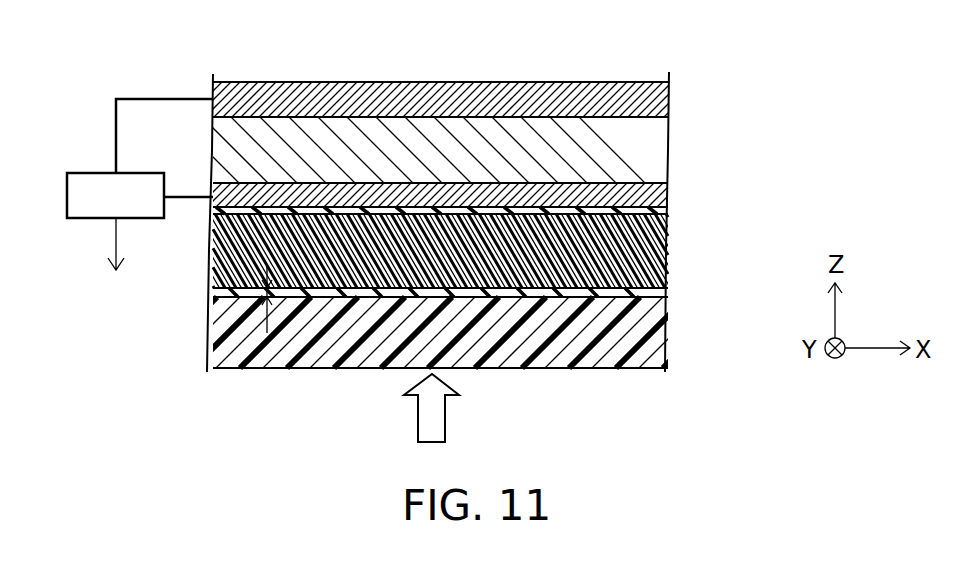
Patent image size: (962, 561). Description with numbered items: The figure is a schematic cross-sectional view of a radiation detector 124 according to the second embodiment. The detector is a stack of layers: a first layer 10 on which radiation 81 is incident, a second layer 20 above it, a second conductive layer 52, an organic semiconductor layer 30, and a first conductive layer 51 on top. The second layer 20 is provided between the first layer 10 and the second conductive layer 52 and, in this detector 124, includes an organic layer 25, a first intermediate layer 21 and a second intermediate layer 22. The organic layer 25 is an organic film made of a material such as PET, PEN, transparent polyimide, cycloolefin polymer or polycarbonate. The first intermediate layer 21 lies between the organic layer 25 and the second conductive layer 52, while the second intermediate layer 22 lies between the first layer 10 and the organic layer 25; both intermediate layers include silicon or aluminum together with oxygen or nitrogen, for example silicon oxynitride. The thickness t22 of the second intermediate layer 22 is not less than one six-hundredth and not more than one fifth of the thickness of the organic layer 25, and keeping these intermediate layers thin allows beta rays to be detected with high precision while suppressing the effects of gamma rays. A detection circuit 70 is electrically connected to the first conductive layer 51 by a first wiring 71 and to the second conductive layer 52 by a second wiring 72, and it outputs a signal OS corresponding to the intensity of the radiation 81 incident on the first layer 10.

The radiation detector 124 is at (807, 78).
The first layer 10 is at (645, 338).
The second layer 20 is at (728, 200).
The first intermediate layer 21 is at (660, 211).
The second intermediate layer 22 is at (660, 292).
The organic layer 25 is at (660, 250).
The organic semiconductor layer 30 is at (642, 148).
The first conductive layer 51 is at (655, 105).
The second conductive layer 52 is at (655, 197).
The detection circuit 70 is at (95, 173).
The first wiring 71 is at (116, 118).
The second wiring 72 is at (188, 197).
The radiation 81 is at (418, 417).
The thickness of the second intermediate layer t22 is at (265, 300).
The signal OS is at (116, 242).